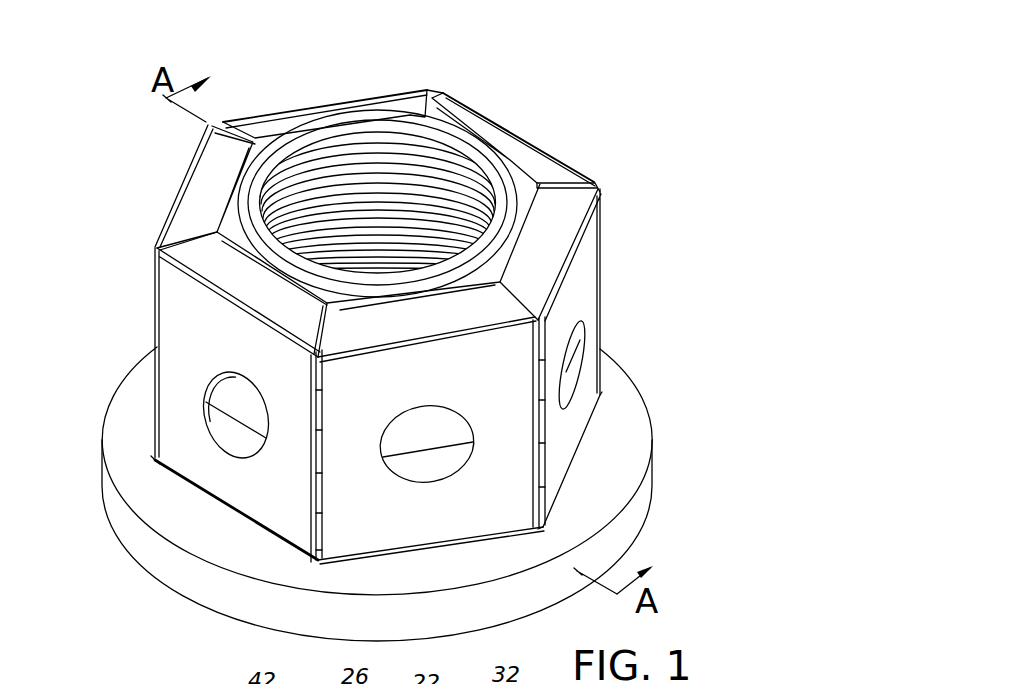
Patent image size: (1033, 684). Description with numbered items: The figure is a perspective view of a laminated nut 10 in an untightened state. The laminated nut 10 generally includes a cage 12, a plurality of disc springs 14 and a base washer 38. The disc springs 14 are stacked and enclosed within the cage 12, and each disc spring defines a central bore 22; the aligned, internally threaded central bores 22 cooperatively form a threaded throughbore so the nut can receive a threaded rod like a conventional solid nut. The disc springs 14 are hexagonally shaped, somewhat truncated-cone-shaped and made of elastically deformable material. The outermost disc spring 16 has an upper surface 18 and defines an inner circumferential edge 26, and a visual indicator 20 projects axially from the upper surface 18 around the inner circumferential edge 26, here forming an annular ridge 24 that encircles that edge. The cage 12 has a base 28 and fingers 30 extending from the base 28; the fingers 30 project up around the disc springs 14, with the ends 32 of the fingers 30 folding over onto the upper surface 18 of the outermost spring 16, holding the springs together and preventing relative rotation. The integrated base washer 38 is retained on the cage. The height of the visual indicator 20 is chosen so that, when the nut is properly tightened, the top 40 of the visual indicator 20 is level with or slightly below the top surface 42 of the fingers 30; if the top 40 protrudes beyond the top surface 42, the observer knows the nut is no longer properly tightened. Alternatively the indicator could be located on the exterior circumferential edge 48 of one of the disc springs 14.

The laminated nut 10 is at (622, 166).
The cage 12 is at (592, 251).
The disc springs 14 is at (233, 397).
The outermost disc spring 16 is at (233, 228).
The upper surface 18 is at (533, 192).
The visual indicator 20 is at (425, 118).
The central bore 22 is at (328, 162).
The annular ridge 24 is at (283, 137).
The inner circumferential edge 26 is at (458, 140).
The base 28 is at (550, 507).
The fingers 30 is at (592, 308).
The ends of the fingers 32 is at (232, 182).
The base washer 38 is at (625, 513).
The top of the visual indicator 40 is at (598, 195).
The top surface of the fingers 42 is at (240, 288).
The exterior circumferential edge 48 is at (574, 342).